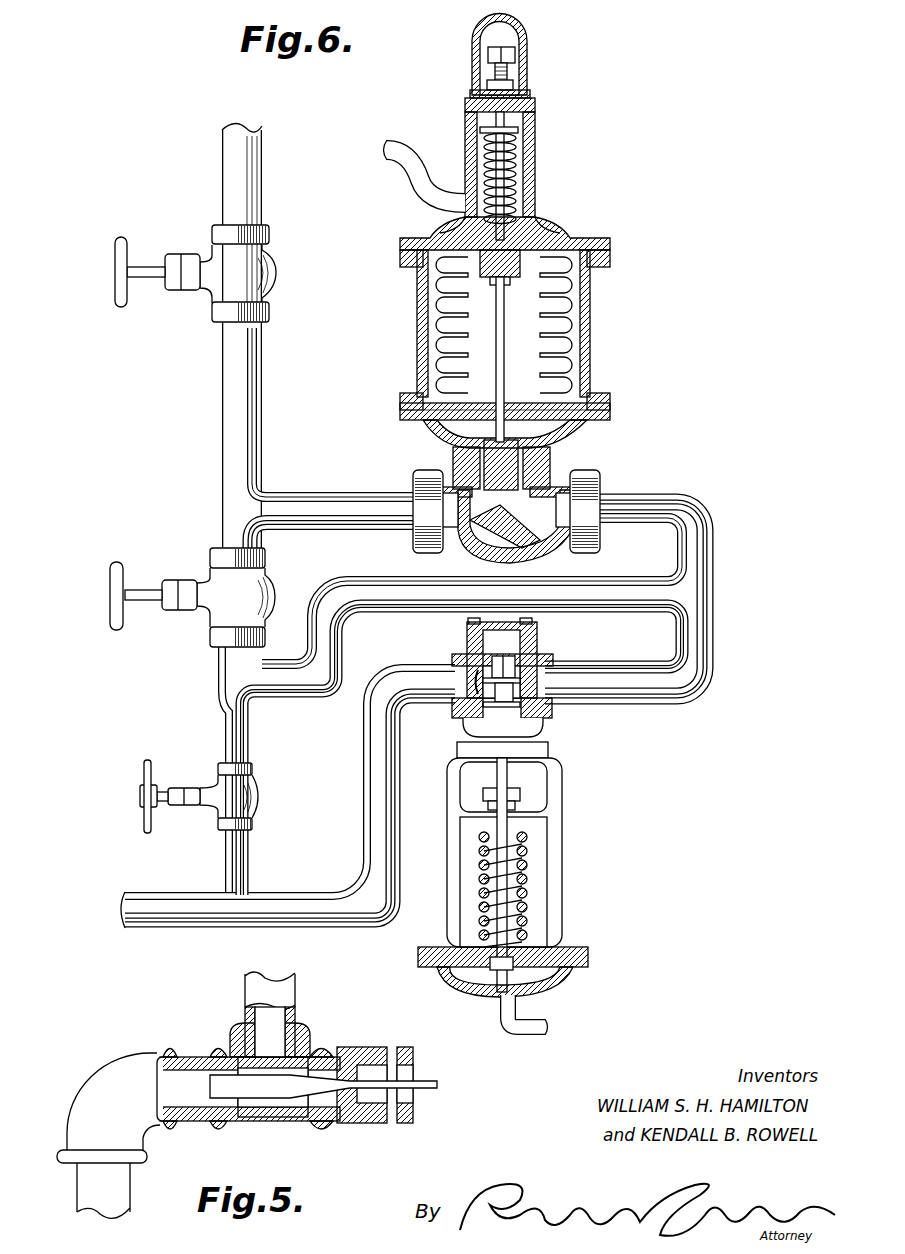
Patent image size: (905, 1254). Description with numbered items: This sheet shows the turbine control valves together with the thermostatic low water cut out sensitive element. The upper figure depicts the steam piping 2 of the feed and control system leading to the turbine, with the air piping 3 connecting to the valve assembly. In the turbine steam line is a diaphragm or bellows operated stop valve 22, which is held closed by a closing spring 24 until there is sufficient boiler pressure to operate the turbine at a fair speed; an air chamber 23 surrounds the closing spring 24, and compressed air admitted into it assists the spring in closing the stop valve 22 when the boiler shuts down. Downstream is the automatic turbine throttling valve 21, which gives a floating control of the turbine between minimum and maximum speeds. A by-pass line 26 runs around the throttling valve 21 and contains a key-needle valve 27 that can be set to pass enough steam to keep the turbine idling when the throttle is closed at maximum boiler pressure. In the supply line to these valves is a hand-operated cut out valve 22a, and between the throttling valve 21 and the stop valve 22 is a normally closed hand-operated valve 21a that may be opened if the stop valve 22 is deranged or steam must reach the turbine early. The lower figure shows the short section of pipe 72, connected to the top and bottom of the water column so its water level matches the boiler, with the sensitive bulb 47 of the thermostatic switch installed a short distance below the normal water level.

In FIG. 6, the steam piping 2 is at (540, 1022).
In FIG. 6, the air piping 3 is at (413, 144).
In FIG. 6, the automatic turbine throttling valve 21 is at (555, 856).
In FIG. 6, the hand-operated valve 21a is at (227, 595).
In FIG. 6, the bellows operated stop valve 22 is at (590, 313).
In FIG. 6, the hand-operated cut out valve 22a is at (264, 275).
In FIG. 6, the air chamber 23 is at (522, 192).
In FIG. 6, the closing spring 24 is at (513, 155).
In FIG. 6, the by-pass line 26 is at (320, 678).
In FIG. 6, the key-needle valve 27 is at (256, 797).
In FIG. 5, the sensitive bulb 47 is at (283, 1117).
In FIG. 5, the short section of pipe 72 is at (88, 1186).